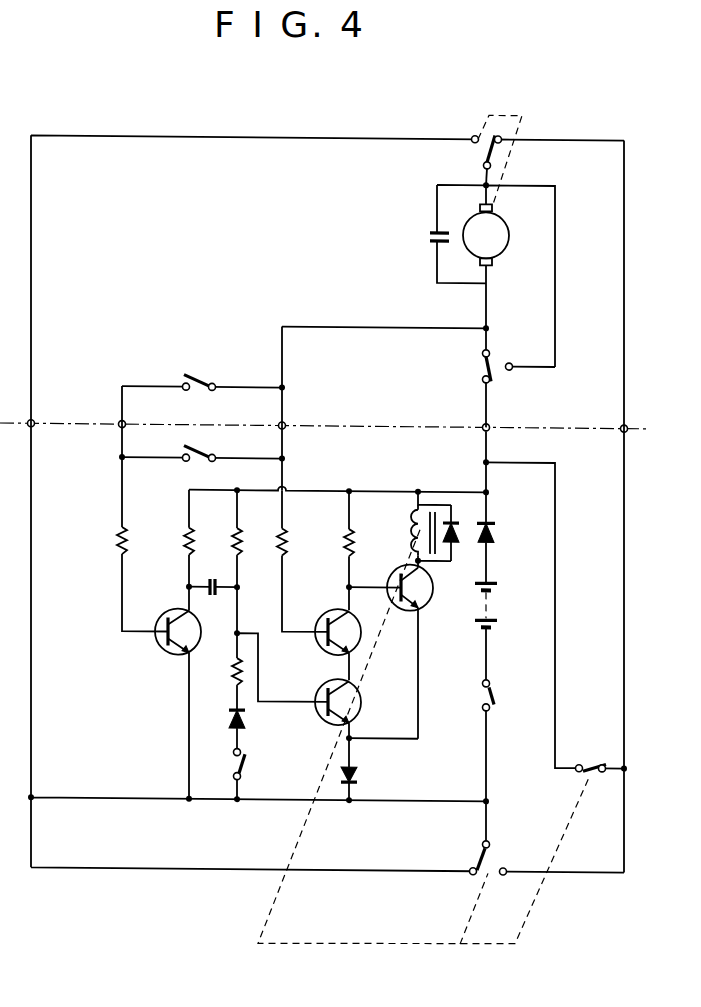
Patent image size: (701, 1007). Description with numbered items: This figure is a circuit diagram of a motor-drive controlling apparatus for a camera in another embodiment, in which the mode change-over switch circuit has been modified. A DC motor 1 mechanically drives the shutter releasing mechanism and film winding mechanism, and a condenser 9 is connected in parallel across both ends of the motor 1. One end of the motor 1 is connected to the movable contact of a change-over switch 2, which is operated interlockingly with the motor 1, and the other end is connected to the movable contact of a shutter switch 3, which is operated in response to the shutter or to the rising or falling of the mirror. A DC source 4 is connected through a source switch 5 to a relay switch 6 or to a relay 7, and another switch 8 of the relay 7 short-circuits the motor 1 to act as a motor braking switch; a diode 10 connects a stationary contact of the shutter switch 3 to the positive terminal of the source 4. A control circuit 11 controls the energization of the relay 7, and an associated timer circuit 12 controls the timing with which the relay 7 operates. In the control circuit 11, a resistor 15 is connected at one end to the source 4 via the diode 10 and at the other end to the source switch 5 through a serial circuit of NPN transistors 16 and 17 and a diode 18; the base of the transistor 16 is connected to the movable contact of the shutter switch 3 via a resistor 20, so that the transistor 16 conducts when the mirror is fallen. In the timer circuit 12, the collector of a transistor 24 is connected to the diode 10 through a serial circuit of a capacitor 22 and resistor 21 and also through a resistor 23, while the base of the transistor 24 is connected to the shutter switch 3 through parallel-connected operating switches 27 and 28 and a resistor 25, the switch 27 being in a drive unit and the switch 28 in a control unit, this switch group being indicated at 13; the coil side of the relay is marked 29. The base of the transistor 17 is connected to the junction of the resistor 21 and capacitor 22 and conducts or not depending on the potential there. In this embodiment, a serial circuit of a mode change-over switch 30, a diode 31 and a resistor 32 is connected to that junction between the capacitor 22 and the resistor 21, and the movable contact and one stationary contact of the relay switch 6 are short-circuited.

The motor 1 is at (510, 231).
The change-over switch 2 is at (480, 128).
The shutter switch 3 is at (484, 361).
The DC source 4 is at (492, 596).
The source switch 5 is at (494, 690).
The relay switch 6 is at (497, 860).
The relay 7 is at (414, 523).
The relay switch 8 is at (592, 755).
The condenser 9 is at (428, 232).
The diode 10 is at (497, 531).
The control circuit 11 is at (437, 667).
The timer circuit 12 is at (68, 653).
The switch unit 13 is at (186, 358).
The resistor 15 is at (355, 535).
The transistor 16 is at (322, 651).
The transistor 17 is at (322, 725).
The diode 18 is at (360, 771).
The resistor 20 is at (288, 535).
The resistor 21 is at (243, 535).
The capacitor 22 is at (215, 575).
The resistor 23 is at (186, 536).
The transistor 24 is at (163, 653).
The resistor 25 is at (117, 536).
The operating switch 27 is at (198, 390).
The operating switch 28 is at (198, 461).
The diode 29 is at (455, 534).
The mode change-over switch 30 is at (246, 770).
The diode 31 is at (228, 724).
The resistor 32 is at (233, 673).